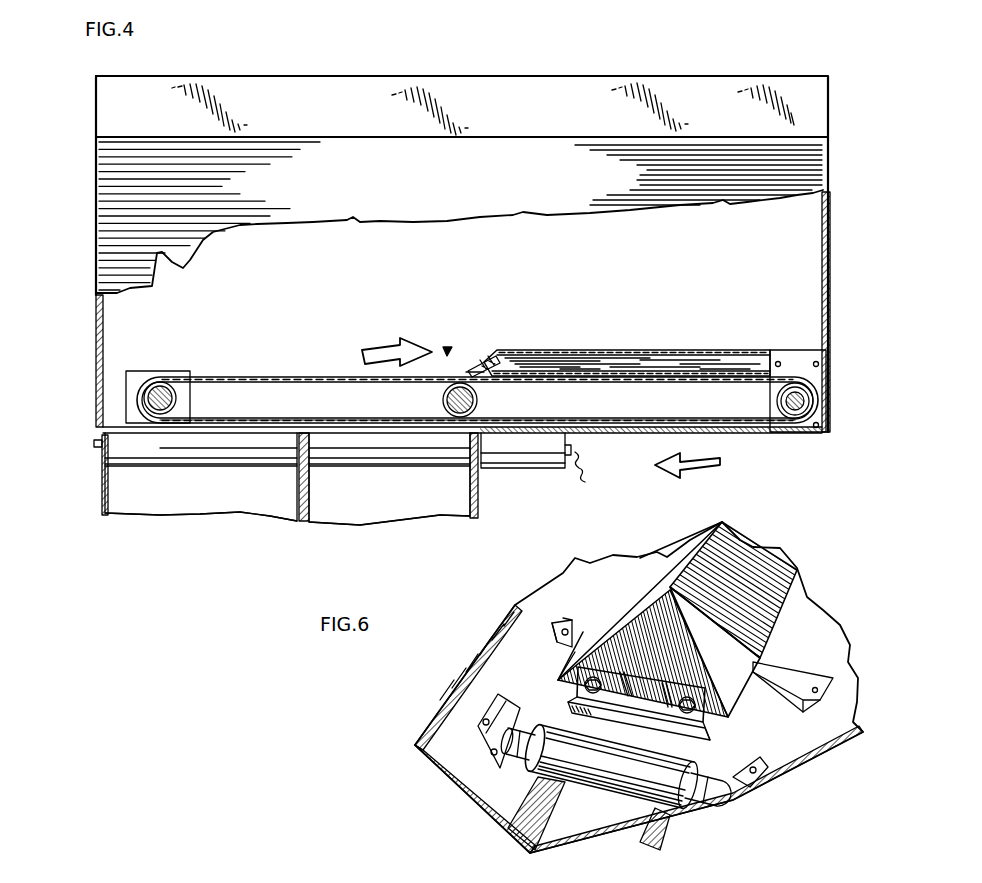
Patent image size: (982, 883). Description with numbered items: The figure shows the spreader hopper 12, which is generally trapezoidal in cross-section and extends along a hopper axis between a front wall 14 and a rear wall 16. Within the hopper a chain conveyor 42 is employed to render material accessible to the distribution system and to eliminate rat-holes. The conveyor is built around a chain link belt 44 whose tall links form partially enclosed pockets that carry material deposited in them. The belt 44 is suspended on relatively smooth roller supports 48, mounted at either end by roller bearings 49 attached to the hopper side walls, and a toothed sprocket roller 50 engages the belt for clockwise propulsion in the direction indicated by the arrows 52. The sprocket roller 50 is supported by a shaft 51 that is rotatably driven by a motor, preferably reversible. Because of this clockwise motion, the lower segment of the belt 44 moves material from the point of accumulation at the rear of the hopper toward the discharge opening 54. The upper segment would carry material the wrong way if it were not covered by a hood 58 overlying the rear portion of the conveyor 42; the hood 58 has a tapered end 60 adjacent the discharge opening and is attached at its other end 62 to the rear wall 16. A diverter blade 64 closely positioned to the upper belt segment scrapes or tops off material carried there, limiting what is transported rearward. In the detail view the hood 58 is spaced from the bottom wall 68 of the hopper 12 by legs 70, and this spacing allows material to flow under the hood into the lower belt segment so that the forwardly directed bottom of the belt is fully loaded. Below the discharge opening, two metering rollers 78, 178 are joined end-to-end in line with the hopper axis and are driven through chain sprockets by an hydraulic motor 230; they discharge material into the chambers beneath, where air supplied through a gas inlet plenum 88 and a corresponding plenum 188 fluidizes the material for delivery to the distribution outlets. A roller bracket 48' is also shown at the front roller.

In FIG. 4, the hopper 12 is at (814, 97).
In FIG. 6, the hopper 12 is at (530, 600).
In FIG. 4, the front wall 14 is at (96, 358).
In FIG. 4, the rear wall 16 is at (826, 224).
In FIG. 4, the chain conveyor 42 is at (450, 350).
In FIG. 4, the chain link belt 44 is at (270, 373).
In FIG. 4, the roller supports 48 is at (310, 374).
In FIG. 6, the roller supports 48 is at (604, 786).
In FIG. 4, the roller bracket 48' is at (188, 397).
In FIG. 6, the roller bearings 49 is at (480, 727).
In FIG. 4, the sprocket roller 50 is at (818, 396).
In FIG. 4, the shaft 51 is at (794, 418).
In FIG. 4, the arrows 52 is at (388, 340).
In FIG. 4, the discharge opening 54 is at (280, 428).
In FIG. 4, the hood 58 is at (636, 348).
In FIG. 6, the hood 58 is at (755, 556).
In FIG. 6, the tapered end 60 is at (682, 638).
In FIG. 4, the other end 62 is at (806, 350).
In FIG. 4, the diverter blade 64 is at (476, 364).
In FIG. 6, the diverter blade 64 is at (630, 692).
In FIG. 4, the bottom wall 68 is at (698, 425).
In FIG. 6, the bottom wall 68 is at (612, 752).
In FIG. 6, the legs 70 is at (583, 626).
In FIG. 4, the metering roller 78 is at (235, 447).
In FIG. 4, the gas inlet plenum 88 is at (212, 512).
In FIG. 4, the second metering roller 178 is at (355, 450).
In FIG. 4, the second bin bottom 188 is at (400, 515).
In FIG. 4, the hydraulic motor 230 is at (548, 465).